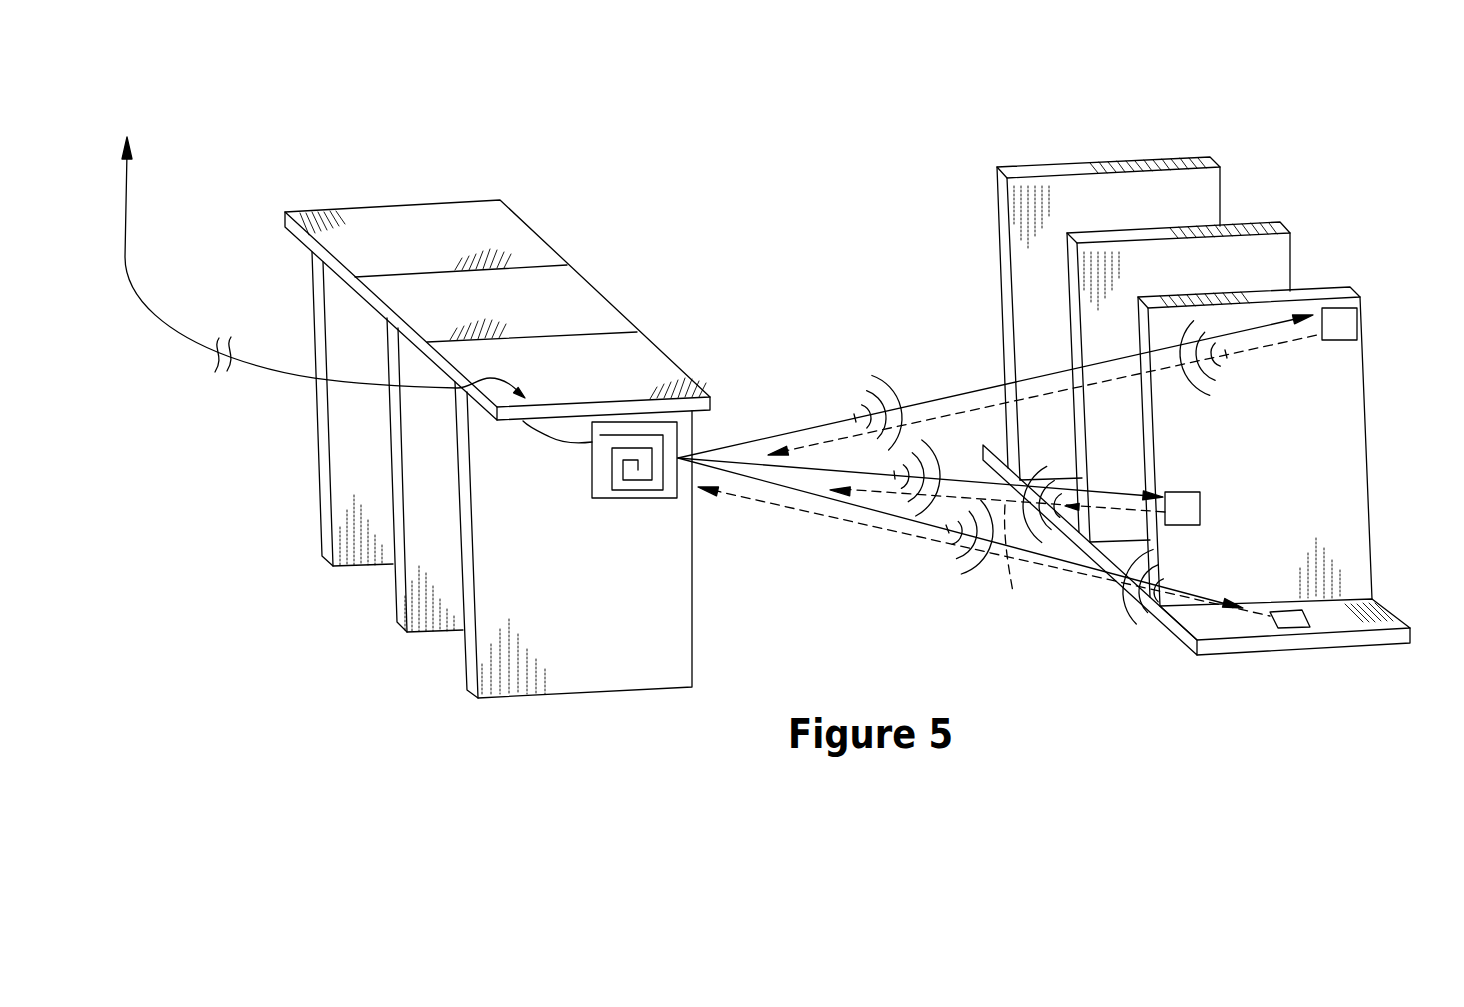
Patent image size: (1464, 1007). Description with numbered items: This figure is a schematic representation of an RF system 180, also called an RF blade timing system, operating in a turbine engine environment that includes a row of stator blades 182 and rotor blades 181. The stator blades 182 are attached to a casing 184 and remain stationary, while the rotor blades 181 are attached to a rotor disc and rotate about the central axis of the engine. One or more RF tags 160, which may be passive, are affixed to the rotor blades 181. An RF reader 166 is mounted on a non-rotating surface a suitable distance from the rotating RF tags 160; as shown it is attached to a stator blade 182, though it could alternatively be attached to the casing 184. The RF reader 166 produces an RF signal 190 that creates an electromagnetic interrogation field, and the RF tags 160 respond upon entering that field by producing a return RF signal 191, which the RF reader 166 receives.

The RF system 180 is at (410, 389).
The casing 184 is at (518, 242).
The stator blades 182 is at (357, 562).
The RF reader 166 is at (657, 498).
The rotor blades 181 is at (1033, 190).
The RF tags 160 is at (1357, 327).
The RF signal 190 is at (928, 397).
The return RF signal 191 is at (985, 407).